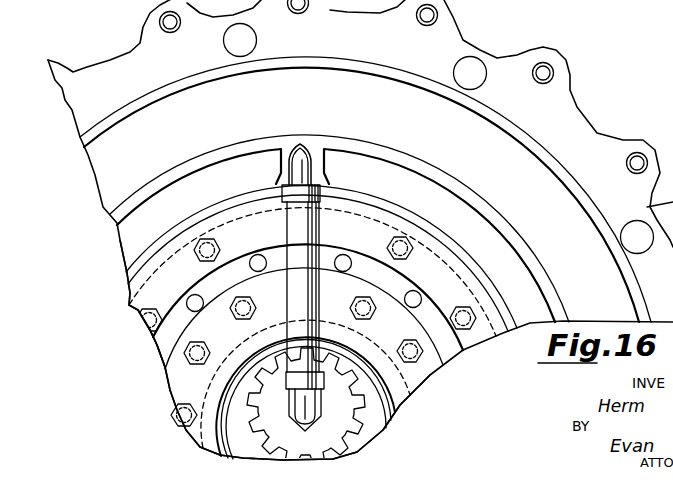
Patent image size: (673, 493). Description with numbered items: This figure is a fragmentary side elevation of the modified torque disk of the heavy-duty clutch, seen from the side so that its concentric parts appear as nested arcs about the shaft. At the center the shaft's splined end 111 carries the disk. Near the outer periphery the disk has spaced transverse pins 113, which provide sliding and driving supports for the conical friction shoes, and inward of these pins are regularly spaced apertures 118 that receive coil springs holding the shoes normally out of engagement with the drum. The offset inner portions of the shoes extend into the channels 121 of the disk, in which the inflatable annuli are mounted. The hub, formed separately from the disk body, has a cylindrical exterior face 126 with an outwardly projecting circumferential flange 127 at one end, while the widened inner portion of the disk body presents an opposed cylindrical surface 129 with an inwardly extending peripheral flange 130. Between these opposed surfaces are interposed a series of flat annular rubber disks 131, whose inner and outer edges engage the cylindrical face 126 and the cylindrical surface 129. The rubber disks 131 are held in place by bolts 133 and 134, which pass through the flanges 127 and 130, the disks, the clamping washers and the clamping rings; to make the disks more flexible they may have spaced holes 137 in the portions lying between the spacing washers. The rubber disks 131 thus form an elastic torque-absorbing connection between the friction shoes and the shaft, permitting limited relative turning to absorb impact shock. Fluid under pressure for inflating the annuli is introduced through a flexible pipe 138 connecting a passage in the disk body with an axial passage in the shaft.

The splined end 111 is at (363, 410).
The transverse pins 113 is at (552, 71).
The apertures 118 is at (242, 56).
The channels 121 is at (532, 228).
The cylindrical exterior face 126 is at (193, 432).
The circumferential flange 127 is at (182, 387).
The cylindrical surface 129 is at (353, 216).
The peripheral flange 130 is at (476, 338).
The annular rubber disks 131 is at (160, 340).
The bolts 133 is at (185, 355).
The bolts 134 is at (410, 238).
The spaced holes 137 is at (257, 254).
The flexible pipe 138 is at (198, 240).